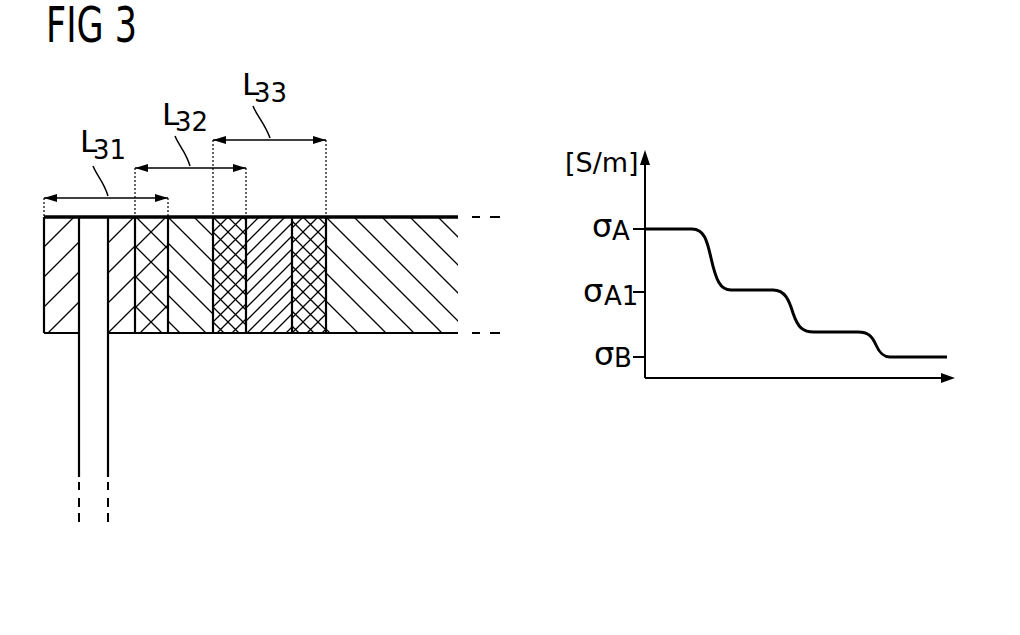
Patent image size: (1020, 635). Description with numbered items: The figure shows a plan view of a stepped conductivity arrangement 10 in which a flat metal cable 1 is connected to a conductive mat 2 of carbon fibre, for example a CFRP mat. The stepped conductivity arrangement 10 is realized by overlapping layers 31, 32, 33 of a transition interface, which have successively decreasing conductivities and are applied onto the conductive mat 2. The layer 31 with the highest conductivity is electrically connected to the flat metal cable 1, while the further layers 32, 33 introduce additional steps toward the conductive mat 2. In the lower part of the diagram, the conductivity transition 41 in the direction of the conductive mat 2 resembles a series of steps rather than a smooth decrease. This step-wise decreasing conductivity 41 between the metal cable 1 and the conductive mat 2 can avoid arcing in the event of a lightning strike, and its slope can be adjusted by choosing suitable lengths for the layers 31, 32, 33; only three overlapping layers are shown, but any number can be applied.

The flat metal cable 1 is at (100, 437).
The conductive mat 2 is at (403, 324).
The stepped conductivity arrangement 10 is at (456, 137).
The layer 31 is at (127, 335).
The layer 32 is at (189, 326).
The layer 33 is at (268, 326).
The conductivity transition 41 is at (768, 286).